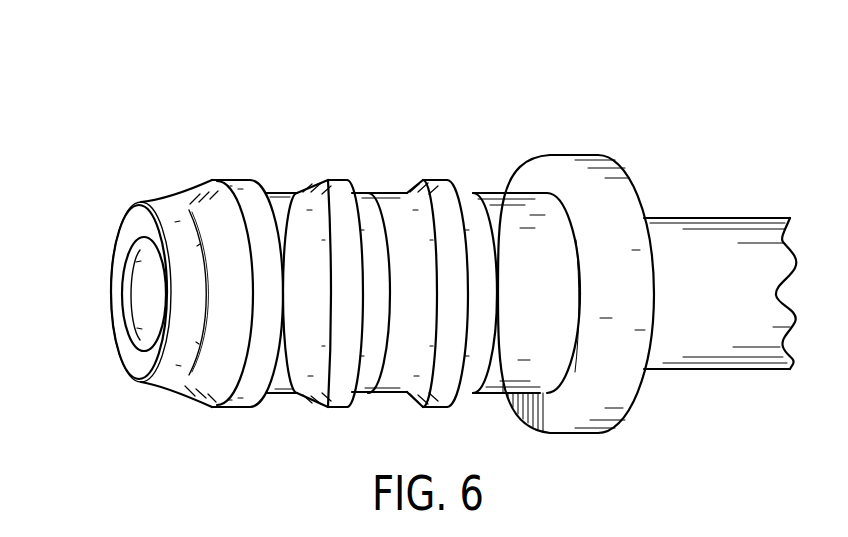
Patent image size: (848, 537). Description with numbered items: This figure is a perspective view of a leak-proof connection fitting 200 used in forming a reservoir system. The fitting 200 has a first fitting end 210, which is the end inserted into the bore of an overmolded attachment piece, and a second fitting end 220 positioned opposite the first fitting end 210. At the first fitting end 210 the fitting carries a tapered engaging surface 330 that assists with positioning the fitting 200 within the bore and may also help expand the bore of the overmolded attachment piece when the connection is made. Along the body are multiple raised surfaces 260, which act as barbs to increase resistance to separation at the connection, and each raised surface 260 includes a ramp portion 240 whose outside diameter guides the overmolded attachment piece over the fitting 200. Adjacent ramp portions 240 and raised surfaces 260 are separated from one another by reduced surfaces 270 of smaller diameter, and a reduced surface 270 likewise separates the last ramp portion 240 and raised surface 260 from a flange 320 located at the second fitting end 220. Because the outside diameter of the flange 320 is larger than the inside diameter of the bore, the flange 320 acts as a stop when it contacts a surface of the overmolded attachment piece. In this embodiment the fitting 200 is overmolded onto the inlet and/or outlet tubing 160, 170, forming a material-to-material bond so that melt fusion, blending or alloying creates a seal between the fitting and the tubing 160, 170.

The leak-proof connection fitting 200 is at (198, 120).
The first fitting end 210 is at (121, 363).
The tapered engaging surface 330 is at (182, 188).
The ramp portion 240 is at (33, 178).
The raised surface 260 is at (257, 196).
The reduced surface 270 is at (287, 196).
The second fitting end 220 is at (642, 189).
The flange 320 is at (592, 415).
The inlet tubing 160 is at (697, 335).
The outlet tubing 170 is at (723, 293).